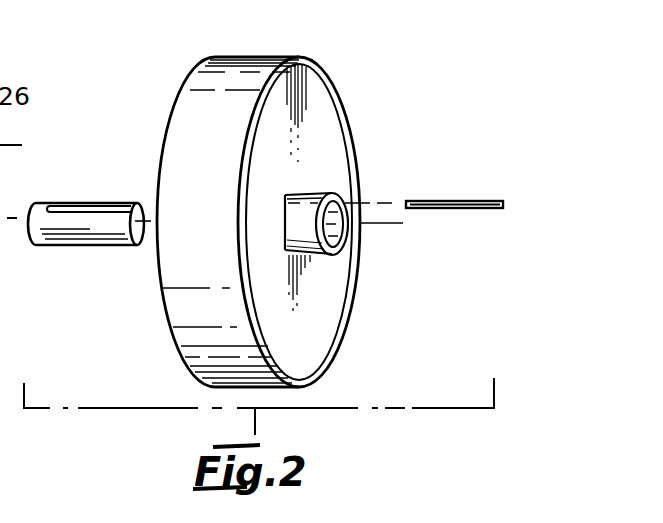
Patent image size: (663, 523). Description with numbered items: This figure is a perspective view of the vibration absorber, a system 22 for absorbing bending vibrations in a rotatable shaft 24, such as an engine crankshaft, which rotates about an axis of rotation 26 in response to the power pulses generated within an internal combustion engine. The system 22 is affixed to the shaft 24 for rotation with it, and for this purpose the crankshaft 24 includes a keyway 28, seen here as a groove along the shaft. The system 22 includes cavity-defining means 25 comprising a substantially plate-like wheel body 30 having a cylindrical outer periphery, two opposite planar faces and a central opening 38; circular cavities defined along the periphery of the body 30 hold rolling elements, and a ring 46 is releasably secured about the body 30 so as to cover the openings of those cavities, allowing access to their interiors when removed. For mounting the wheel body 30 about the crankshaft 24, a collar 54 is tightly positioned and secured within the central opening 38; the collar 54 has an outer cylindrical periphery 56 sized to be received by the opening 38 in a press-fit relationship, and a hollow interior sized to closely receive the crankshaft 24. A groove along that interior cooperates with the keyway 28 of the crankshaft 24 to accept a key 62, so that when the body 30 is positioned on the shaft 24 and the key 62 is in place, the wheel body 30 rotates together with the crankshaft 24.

The system 22 is at (258, 49).
The rotatable shaft 24 is at (62, 230).
The cavity-defining means 25 is at (357, 138).
The axis of rotation 26 is at (144, 213).
The keyway 28 is at (73, 201).
The wheel body 30 is at (312, 108).
The central opening 38 is at (318, 254).
The ring 46 is at (310, 315).
The collar 54 is at (322, 193).
The outer cylindrical periphery 56 is at (295, 197).
The key 62 is at (428, 198).